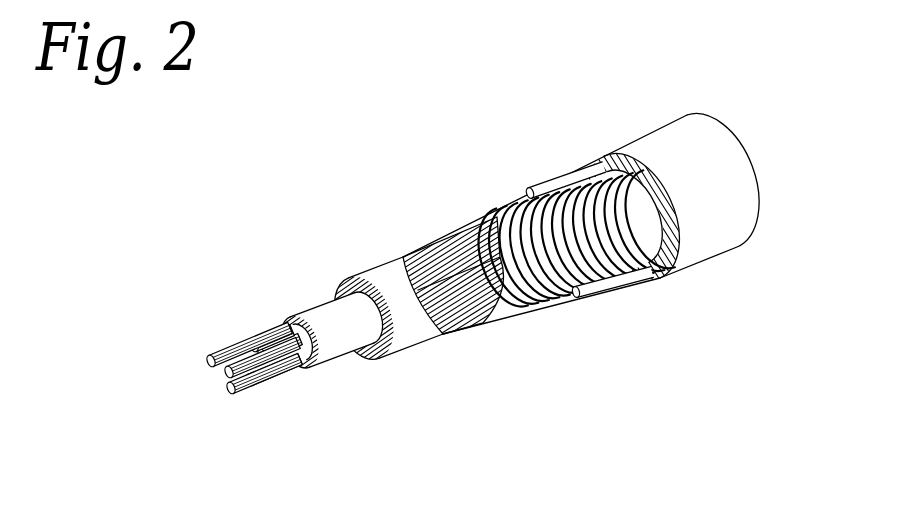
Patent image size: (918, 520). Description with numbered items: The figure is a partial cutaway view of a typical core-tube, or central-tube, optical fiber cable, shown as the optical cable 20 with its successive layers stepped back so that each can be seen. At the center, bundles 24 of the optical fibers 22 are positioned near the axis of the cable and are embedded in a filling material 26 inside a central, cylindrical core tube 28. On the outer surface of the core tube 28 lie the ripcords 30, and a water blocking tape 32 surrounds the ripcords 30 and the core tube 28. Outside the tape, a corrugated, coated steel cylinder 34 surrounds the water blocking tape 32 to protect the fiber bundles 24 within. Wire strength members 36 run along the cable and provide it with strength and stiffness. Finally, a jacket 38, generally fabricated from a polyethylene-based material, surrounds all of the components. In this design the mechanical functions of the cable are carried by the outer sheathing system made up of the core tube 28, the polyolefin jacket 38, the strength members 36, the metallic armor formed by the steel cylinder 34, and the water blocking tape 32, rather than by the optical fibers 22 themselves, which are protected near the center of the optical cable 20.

The optical cable 20 is at (772, 102).
The optical fibers 22 is at (220, 383).
The bundles 24 is at (283, 363).
The filling material 26 is at (340, 347).
The core tube 28 is at (410, 342).
The ripcords 30 is at (385, 260).
The water blocking tape 32 is at (430, 250).
The corrugated, coated steel cylinder 34 is at (495, 212).
The wire strength members 36 is at (562, 176).
The jacket 38 is at (727, 245).